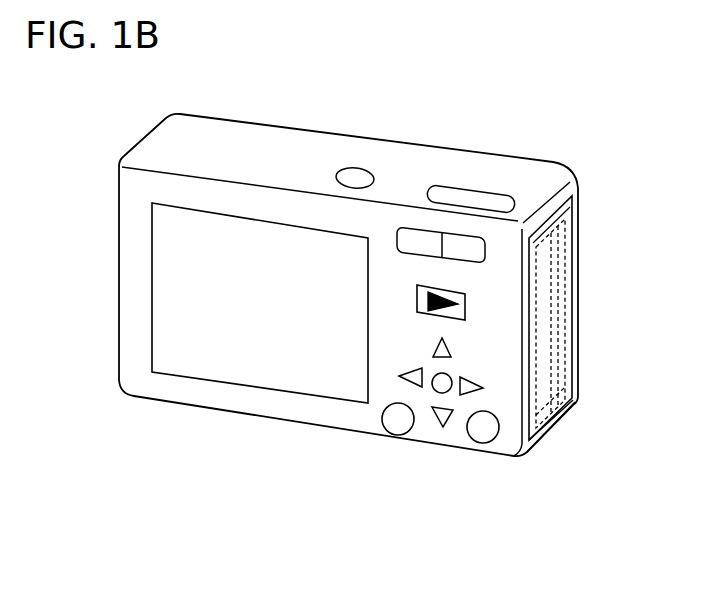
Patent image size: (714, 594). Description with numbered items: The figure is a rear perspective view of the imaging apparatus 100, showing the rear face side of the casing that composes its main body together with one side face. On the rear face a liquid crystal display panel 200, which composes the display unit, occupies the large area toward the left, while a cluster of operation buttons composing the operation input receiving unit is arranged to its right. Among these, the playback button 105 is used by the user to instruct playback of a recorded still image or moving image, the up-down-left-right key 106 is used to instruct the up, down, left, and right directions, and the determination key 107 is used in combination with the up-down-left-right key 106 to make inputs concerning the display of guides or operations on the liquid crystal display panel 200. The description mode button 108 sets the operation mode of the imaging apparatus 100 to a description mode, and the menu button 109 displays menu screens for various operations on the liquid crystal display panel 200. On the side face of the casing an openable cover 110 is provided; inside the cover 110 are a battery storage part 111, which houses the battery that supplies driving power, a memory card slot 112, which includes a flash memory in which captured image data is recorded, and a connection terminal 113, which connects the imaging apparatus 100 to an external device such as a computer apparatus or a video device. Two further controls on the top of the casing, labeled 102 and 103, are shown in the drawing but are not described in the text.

The imaging apparatus 100 is at (452, 102).
The shutter button 102 is at (487, 197).
The power button 103 is at (347, 172).
The playback button 105 is at (465, 310).
The up-down-left-right key 106 is at (443, 412).
The determination key 107 is at (435, 390).
The description mode button 108 is at (485, 432).
The menu button 109 is at (398, 423).
The openable cover 110 is at (570, 407).
The battery storage part 111 is at (540, 282).
The memory card slot 112 is at (562, 311).
The connection terminal 113 is at (537, 433).
The liquid crystal display panel 200 is at (208, 380).